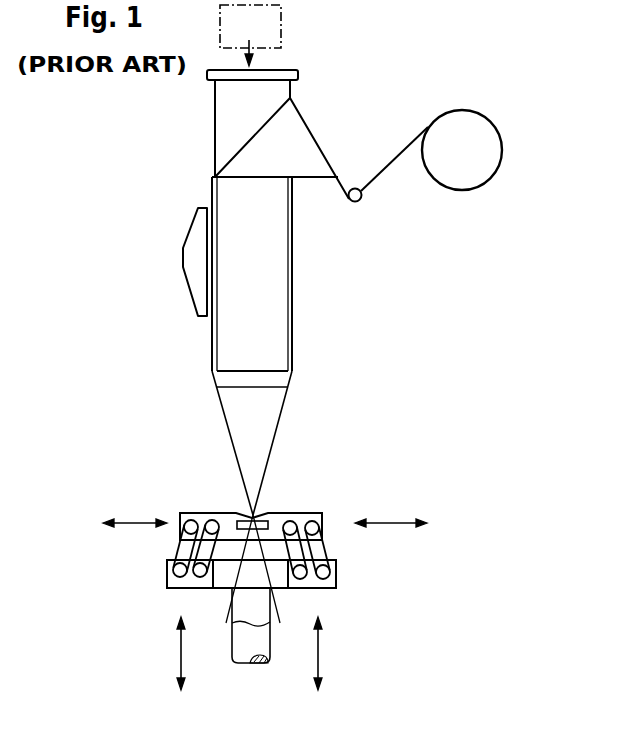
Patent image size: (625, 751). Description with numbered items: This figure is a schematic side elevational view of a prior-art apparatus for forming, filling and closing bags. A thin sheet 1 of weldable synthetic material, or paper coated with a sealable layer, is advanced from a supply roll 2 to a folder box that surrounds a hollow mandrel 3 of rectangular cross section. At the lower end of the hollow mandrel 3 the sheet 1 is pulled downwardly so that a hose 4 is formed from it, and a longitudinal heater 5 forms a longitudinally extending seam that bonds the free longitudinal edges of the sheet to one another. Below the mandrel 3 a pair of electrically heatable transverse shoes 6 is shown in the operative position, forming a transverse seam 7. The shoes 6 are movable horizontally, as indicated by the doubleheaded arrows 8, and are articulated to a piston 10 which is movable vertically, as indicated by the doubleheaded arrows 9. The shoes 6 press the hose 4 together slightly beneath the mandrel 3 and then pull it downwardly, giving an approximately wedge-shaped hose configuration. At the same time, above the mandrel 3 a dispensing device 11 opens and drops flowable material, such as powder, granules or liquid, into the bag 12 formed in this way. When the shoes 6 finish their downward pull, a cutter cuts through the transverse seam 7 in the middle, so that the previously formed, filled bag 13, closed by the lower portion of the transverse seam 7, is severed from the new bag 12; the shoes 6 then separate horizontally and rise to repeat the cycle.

The thin sheet 1 is at (382, 177).
The supply roll 2 is at (493, 172).
The hollow mandrel 3 is at (233, 142).
The hose 4 is at (292, 348).
The longitudinal heater 5 is at (202, 271).
The transverse shoes 6 is at (207, 517).
The transverse seam 7 is at (262, 522).
The doubleheaded arrows 8 is at (265, 513).
The doubleheaded arrows 9 is at (248, 653).
The piston 10 is at (167, 582).
The dispensing device 11 is at (282, 27).
The bag 12 is at (253, 435).
The filled bag 13 is at (262, 581).